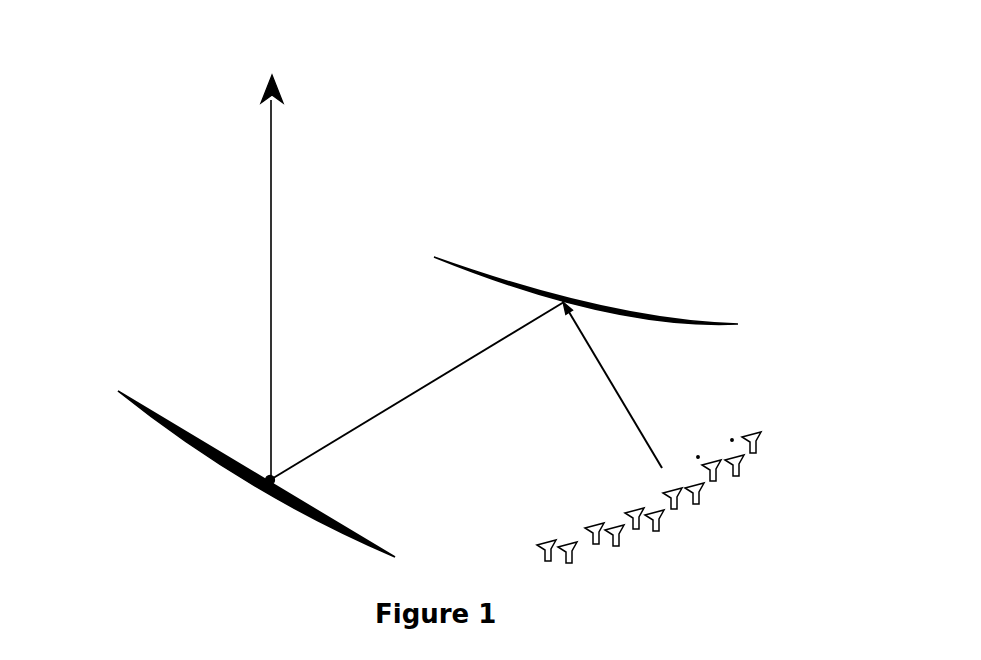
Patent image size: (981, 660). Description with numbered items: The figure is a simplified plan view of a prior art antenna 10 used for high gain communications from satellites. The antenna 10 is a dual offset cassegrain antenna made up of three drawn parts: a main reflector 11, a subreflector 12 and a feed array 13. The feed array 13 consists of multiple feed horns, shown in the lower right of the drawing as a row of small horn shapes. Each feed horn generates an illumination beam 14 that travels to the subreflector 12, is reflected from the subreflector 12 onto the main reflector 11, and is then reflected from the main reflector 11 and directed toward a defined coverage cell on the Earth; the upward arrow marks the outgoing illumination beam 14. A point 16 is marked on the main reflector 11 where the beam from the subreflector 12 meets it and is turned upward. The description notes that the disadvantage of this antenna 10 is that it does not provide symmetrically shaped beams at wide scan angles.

The antenna 10 is at (74, 81).
The main reflector 11 is at (117, 407).
The subreflector 12 is at (450, 253).
The feed array 13 is at (772, 435).
The illumination beam 14 is at (287, 87).
The reflection point 16 is at (252, 493).